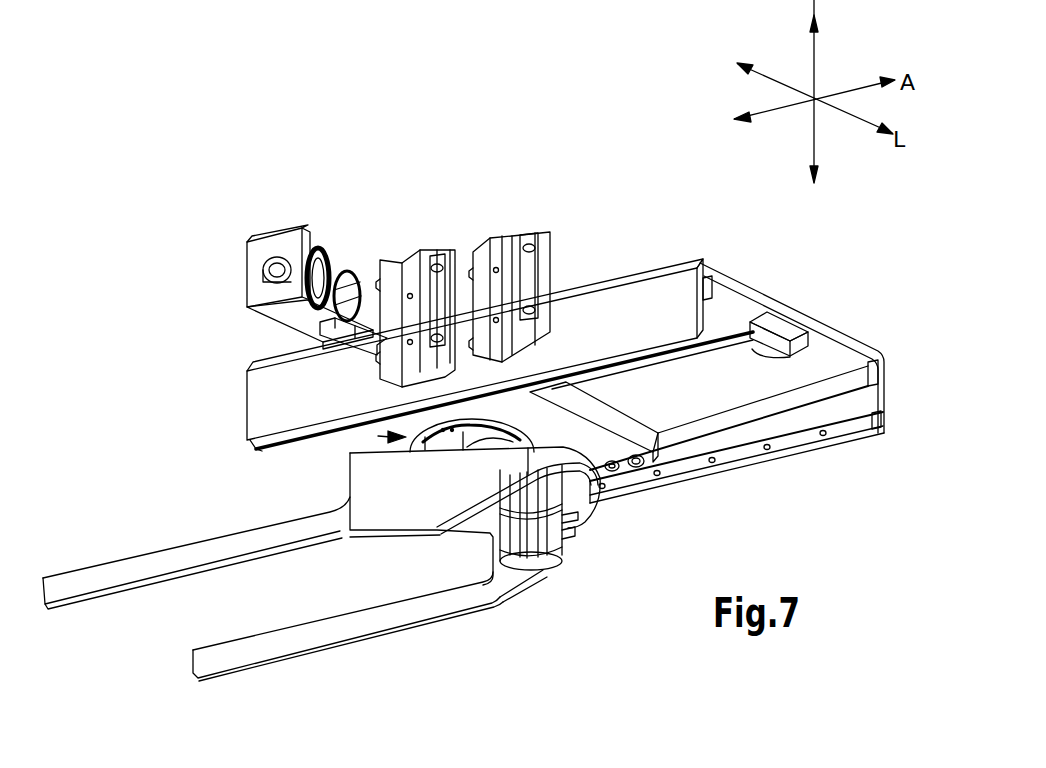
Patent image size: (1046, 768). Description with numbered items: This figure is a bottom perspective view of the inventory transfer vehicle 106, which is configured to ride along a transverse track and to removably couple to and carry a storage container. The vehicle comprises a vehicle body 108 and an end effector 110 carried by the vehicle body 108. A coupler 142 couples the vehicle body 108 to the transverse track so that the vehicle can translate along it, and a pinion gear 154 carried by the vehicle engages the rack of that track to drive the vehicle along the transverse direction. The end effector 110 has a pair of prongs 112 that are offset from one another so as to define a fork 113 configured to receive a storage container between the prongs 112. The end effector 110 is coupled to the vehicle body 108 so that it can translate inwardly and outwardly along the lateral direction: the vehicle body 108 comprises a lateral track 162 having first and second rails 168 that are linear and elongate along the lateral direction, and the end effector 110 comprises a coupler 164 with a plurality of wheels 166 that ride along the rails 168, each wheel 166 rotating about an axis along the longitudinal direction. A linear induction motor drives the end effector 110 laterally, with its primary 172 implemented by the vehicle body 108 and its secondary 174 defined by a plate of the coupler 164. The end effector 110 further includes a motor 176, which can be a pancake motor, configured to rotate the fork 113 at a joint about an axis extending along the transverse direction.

The inventory transfer vehicle 106 is at (502, 417).
The vehicle body 108 is at (762, 290).
The end effector 110 is at (356, 555).
The prongs 112 is at (143, 568).
The fork 113 is at (237, 563).
The coupler 142 is at (466, 268).
The pinion gear 154 is at (320, 247).
The lateral track 162 is at (832, 420).
The coupler 164 is at (668, 470).
The wheels 166 is at (595, 480).
The rail 168 is at (698, 320).
The primary 172 is at (792, 352).
The secondary 174 is at (352, 438).
The motor 176 is at (532, 563).